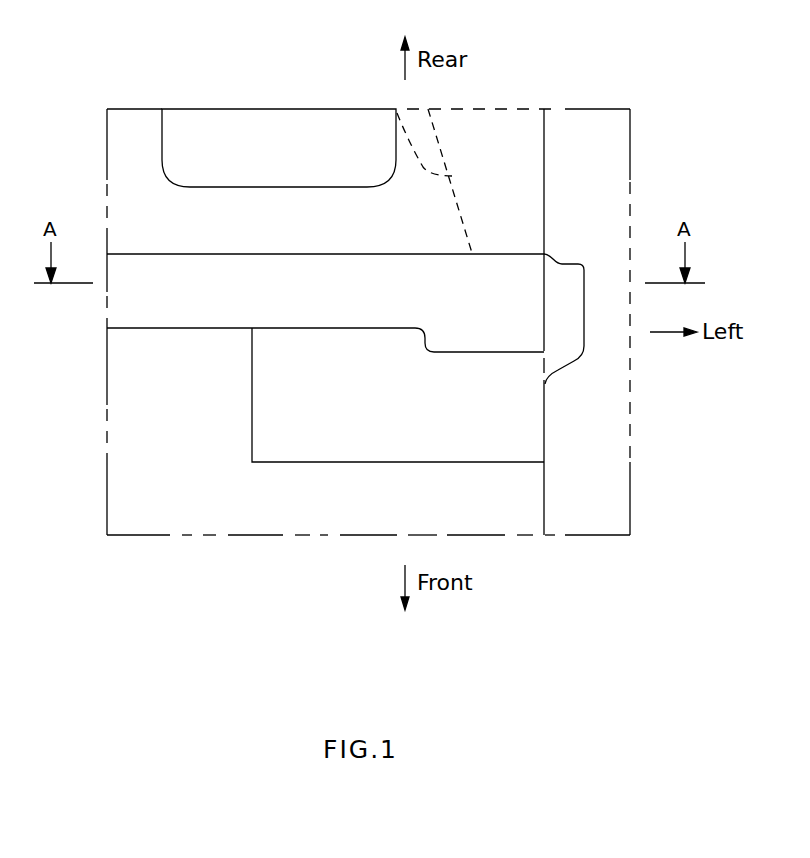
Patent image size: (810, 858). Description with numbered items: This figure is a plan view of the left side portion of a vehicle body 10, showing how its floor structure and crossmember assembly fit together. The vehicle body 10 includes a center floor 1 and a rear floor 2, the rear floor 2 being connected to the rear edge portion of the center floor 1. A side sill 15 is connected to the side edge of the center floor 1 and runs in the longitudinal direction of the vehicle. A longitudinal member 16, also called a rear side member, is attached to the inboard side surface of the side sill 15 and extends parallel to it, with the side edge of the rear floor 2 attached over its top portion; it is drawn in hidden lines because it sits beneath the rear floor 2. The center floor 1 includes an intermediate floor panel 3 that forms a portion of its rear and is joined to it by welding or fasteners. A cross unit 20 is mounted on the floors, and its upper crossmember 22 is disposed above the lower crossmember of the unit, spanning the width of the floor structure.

The vehicle body 10 is at (64, 38).
The center floor 1 is at (122, 490).
The rear floor 2 is at (122, 154).
The intermediate floor panel 3 is at (529, 419).
The side sill 15 is at (610, 484).
The longitudinal member 16 is at (388, 105).
The cross unit 20 is at (137, 333).
The upper crossmember 22 is at (199, 316).